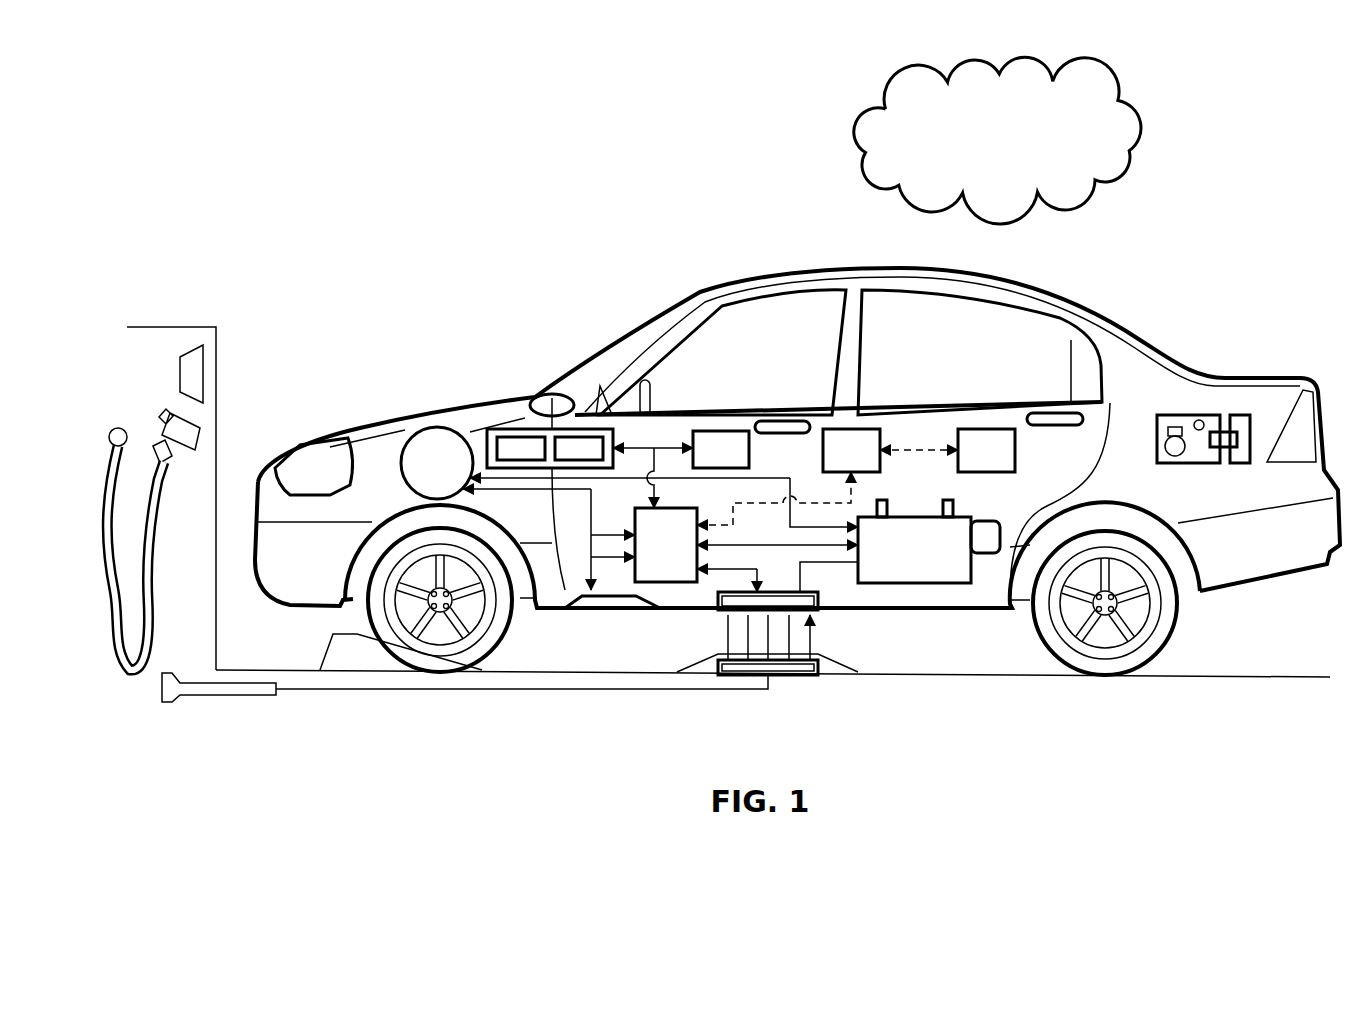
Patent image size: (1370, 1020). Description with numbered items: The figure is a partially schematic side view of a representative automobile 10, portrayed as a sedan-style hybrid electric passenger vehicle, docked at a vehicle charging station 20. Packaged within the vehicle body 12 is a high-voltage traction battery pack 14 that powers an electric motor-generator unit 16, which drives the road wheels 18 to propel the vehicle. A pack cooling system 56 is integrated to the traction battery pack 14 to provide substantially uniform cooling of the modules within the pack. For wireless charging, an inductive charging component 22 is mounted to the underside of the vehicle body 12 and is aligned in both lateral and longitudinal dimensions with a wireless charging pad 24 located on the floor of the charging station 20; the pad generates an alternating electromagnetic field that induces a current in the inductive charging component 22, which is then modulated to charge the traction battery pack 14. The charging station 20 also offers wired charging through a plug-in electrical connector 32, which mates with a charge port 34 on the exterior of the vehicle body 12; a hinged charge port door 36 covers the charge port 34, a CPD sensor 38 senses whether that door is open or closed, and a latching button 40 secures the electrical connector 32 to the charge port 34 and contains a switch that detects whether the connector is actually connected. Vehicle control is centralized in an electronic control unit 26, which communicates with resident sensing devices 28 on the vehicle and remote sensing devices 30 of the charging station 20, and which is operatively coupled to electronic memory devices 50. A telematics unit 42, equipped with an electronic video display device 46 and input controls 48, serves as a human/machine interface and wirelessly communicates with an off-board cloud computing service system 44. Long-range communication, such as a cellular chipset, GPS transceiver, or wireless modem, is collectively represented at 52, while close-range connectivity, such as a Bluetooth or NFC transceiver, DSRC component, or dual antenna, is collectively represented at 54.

The automobile 10 is at (418, 225).
The vehicle body 12 is at (737, 275).
The traction battery pack 14 is at (938, 585).
The electric motor-generator unit 16 is at (418, 430).
The road wheels 18 is at (483, 665).
The vehicle charging station 20 is at (241, 318).
The inductive charging component 22 is at (712, 597).
The wireless charging pad 24 is at (790, 676).
The electronic control unit 26 is at (666, 545).
The resident sensing device 28 is at (578, 612).
The remote sensing device 30 is at (194, 353).
The electrical connector 32 is at (160, 432).
The charge port 34 is at (1168, 427).
The charge port door 36 is at (1240, 415).
The CPD sensor 38 is at (1197, 420).
The latching button 40 is at (163, 410).
The telematics unit 42 is at (468, 446).
The cloud computing service system 44 is at (997, 140).
The electronic video display device 46 is at (507, 436).
The input controls 48 is at (567, 436).
The electronic memory device 50 is at (705, 431).
The long-range communication component 52 is at (872, 429).
The short-range wireless communication device 54 is at (985, 429).
The pack cooling system 56 is at (985, 556).